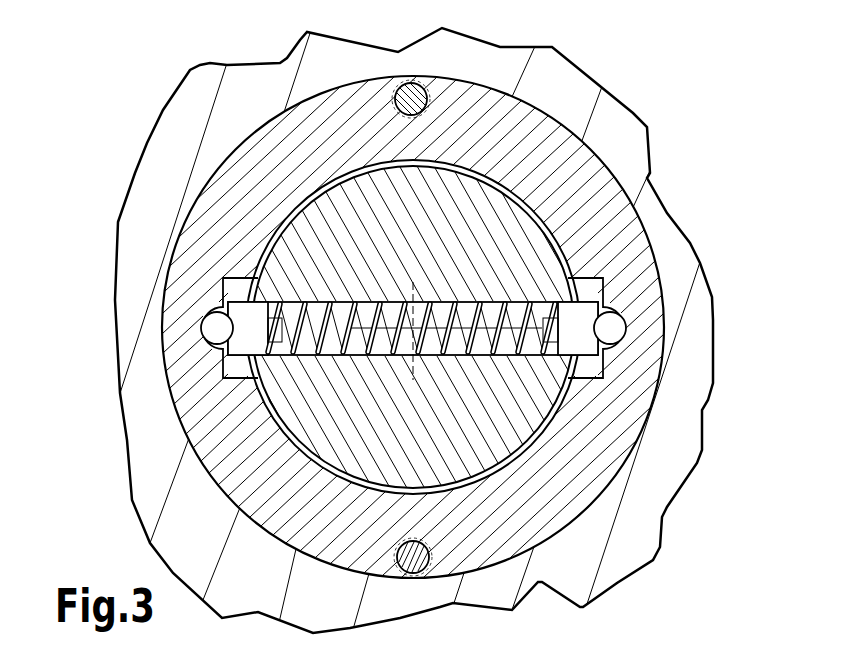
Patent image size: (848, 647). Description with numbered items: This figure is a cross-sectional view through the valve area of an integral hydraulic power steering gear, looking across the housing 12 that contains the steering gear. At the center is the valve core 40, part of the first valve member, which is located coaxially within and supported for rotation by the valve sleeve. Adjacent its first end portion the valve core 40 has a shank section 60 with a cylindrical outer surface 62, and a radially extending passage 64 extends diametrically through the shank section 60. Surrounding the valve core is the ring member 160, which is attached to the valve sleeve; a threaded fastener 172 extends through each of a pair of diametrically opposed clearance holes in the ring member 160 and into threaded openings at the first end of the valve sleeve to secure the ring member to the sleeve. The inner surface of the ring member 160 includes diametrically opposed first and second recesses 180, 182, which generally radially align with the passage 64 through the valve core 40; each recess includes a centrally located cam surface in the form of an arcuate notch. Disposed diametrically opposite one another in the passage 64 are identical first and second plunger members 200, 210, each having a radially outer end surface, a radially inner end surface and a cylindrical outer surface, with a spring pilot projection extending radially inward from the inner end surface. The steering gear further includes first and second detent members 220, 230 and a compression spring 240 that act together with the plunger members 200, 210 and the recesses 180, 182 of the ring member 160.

The housing 12 is at (563, 80).
The valve core 40 is at (497, 472).
The shank section 60 is at (517, 402).
The cylindrical outer surface 62 is at (530, 437).
The radially extending passage 64 is at (520, 295).
The ring member 160 is at (600, 153).
The threaded fastener 172 is at (411, 100).
The first recess 180 is at (595, 292).
The second recess 182 is at (235, 292).
The first plunger member 200 is at (612, 328).
The second plunger member 210 is at (217, 328).
The first detent member 220 is at (580, 343).
The second detent member 230 is at (245, 342).
The compression spring 240 is at (320, 343).